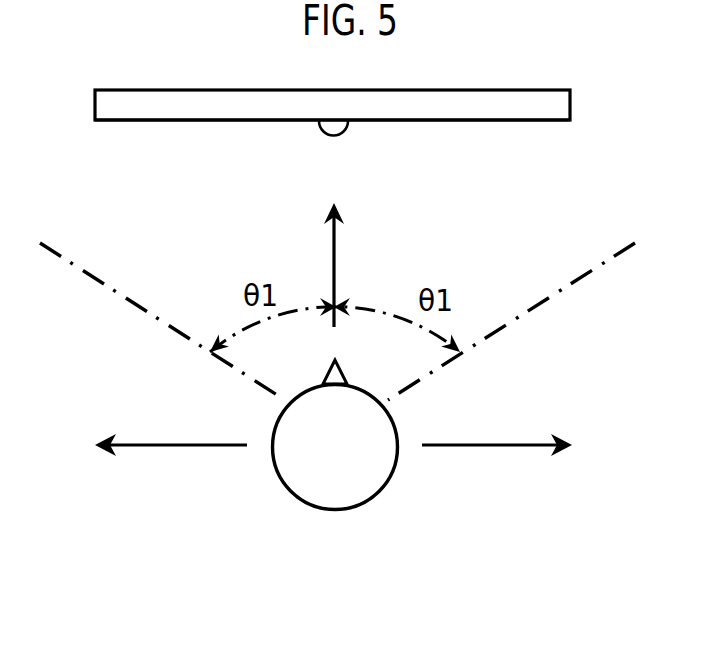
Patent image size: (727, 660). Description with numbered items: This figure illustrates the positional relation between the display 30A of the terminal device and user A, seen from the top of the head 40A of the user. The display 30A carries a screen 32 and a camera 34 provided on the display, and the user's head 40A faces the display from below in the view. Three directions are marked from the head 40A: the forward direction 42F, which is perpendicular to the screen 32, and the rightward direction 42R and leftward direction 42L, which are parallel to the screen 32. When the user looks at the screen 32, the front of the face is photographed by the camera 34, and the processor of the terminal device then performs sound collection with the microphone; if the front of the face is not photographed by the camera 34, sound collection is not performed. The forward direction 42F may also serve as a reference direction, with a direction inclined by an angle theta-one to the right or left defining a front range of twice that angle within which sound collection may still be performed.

The display 30A is at (571, 101).
The screen 32 is at (481, 121).
The camera 34 is at (345, 127).
The head 40A is at (337, 510).
The forward direction 42F is at (336, 252).
The leftward direction 42L is at (185, 446).
The rightward direction 42R is at (505, 446).